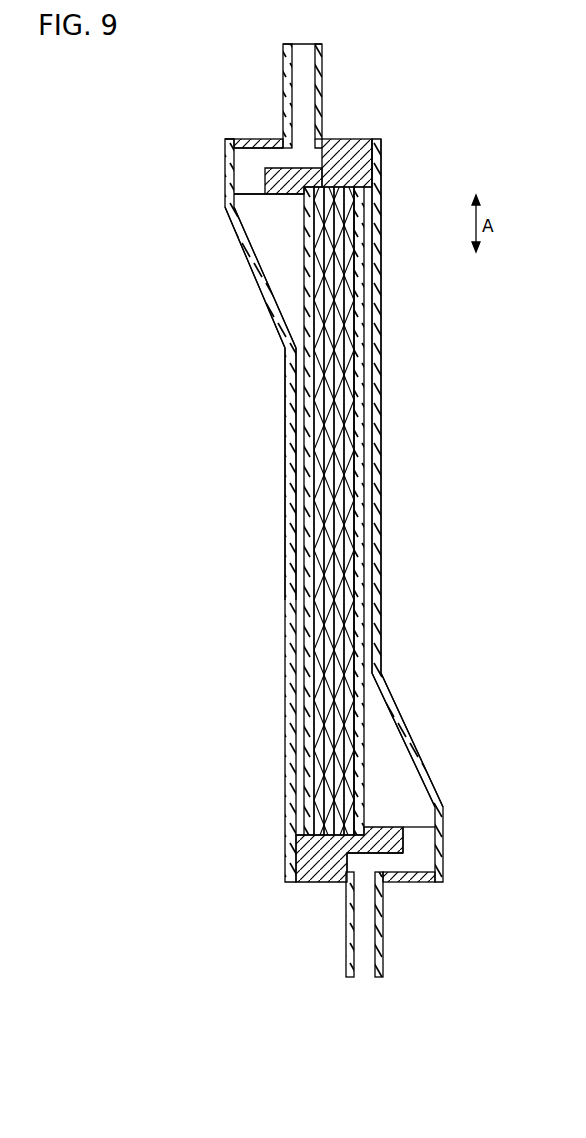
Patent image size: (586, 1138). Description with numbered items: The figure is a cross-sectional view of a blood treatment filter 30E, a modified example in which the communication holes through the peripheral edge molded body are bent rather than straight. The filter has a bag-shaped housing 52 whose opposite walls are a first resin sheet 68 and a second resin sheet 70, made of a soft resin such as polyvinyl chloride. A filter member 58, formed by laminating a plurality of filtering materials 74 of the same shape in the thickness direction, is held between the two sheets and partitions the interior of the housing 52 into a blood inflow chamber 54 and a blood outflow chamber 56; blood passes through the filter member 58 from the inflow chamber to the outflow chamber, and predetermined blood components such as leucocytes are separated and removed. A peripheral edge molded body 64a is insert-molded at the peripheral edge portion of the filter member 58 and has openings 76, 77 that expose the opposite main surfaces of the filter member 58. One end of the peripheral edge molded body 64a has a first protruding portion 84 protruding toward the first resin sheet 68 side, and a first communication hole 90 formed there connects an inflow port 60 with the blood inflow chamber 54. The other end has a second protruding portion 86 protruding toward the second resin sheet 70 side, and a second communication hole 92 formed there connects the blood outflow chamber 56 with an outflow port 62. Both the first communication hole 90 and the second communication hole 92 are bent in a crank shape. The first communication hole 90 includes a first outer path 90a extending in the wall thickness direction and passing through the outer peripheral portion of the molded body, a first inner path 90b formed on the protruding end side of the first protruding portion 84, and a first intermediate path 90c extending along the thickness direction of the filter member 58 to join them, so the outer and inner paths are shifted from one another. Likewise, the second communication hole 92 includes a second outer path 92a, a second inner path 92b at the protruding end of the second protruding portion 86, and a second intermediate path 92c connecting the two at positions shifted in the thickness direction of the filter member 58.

The blood treatment filter 30E is at (110, 106).
The inflow port 60 is at (322, 59).
The outflow port 62 is at (350, 963).
The first protruding portion 84 is at (246, 139).
The first communication hole 90 is at (248, 156).
The first outer path 90a is at (312, 153).
The first inner path 90b is at (246, 186).
The first intermediate path 90c is at (279, 155).
The peripheral edge molded body 64a is at (372, 136).
The opening 77 is at (366, 196).
The filtering material 74 is at (358, 463).
The filter member 58 is at (364, 297).
The blood inflow chamber 54 is at (271, 236).
The second resin sheet 70 is at (382, 384).
The housing 52 is at (286, 432).
The first resin sheet 68 is at (291, 484).
The blood outflow chamber 56 is at (388, 755).
The opening 76 is at (298, 832).
The second communication hole 92 is at (426, 863).
The second outer path 92a is at (352, 876).
The second inner path 92b is at (440, 841).
The second intermediate path 92c is at (386, 866).
The second protruding portion 86 is at (431, 878).